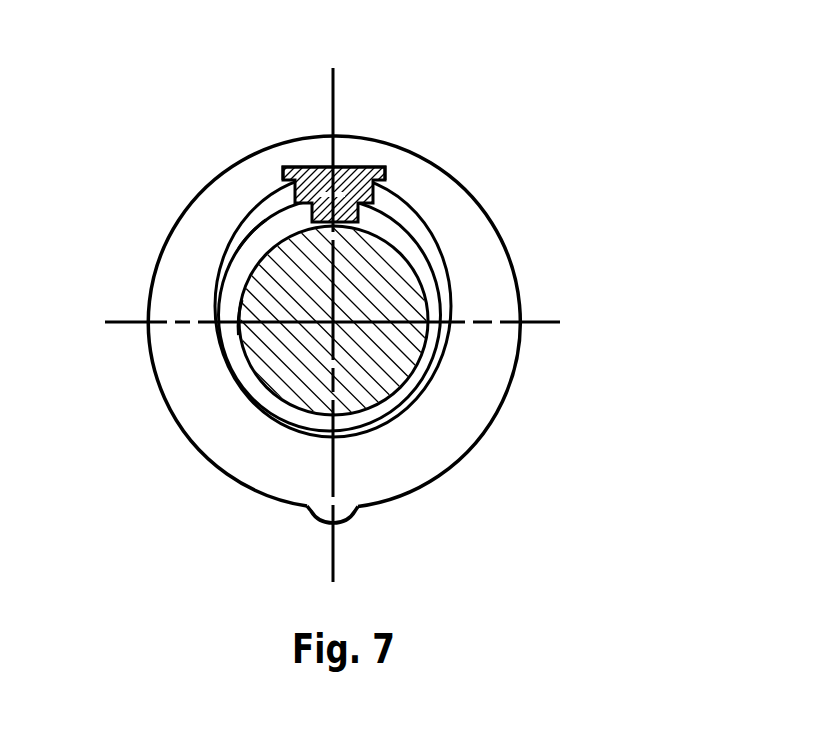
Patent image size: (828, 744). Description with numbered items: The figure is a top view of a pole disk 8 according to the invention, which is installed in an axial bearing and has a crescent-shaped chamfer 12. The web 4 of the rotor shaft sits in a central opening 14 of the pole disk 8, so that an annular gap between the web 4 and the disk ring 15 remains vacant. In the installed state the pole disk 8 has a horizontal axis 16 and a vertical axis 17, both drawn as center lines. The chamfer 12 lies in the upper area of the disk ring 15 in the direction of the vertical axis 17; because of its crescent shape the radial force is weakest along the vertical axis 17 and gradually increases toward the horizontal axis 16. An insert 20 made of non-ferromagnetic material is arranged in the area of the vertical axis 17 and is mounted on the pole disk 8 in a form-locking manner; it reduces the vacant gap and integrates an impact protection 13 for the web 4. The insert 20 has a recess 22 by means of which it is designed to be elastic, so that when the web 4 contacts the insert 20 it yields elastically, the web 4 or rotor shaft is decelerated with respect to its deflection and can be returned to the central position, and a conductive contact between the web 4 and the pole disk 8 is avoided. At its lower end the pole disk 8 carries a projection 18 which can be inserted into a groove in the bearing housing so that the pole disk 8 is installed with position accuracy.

The web 4 is at (380, 375).
The pole disk 8 is at (435, 468).
The chamfer 12 is at (230, 248).
The impact protection 13 is at (270, 227).
The central opening 14 is at (237, 353).
The disk ring 15 is at (465, 228).
The horizontal axis 16 is at (538, 330).
The vertical axis 17 is at (332, 540).
The projection 18 is at (345, 512).
The insert 20 is at (328, 175).
The recess 22 is at (313, 177).